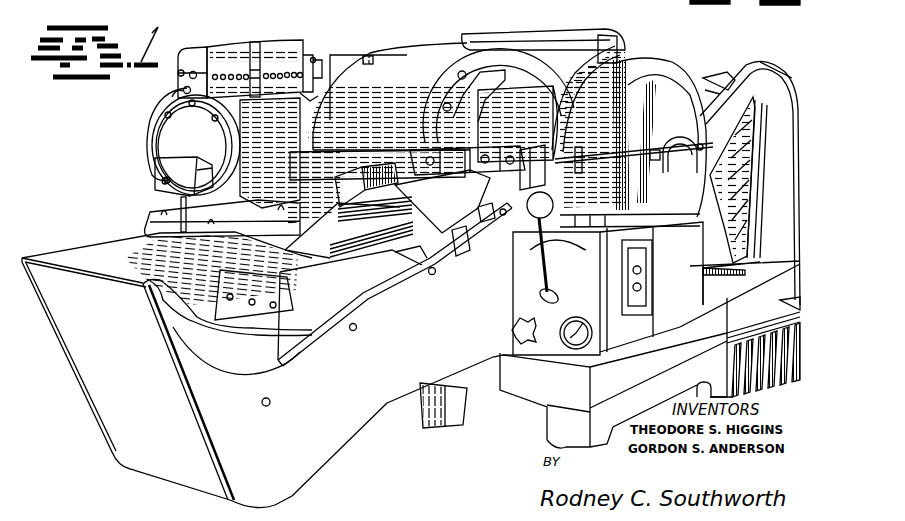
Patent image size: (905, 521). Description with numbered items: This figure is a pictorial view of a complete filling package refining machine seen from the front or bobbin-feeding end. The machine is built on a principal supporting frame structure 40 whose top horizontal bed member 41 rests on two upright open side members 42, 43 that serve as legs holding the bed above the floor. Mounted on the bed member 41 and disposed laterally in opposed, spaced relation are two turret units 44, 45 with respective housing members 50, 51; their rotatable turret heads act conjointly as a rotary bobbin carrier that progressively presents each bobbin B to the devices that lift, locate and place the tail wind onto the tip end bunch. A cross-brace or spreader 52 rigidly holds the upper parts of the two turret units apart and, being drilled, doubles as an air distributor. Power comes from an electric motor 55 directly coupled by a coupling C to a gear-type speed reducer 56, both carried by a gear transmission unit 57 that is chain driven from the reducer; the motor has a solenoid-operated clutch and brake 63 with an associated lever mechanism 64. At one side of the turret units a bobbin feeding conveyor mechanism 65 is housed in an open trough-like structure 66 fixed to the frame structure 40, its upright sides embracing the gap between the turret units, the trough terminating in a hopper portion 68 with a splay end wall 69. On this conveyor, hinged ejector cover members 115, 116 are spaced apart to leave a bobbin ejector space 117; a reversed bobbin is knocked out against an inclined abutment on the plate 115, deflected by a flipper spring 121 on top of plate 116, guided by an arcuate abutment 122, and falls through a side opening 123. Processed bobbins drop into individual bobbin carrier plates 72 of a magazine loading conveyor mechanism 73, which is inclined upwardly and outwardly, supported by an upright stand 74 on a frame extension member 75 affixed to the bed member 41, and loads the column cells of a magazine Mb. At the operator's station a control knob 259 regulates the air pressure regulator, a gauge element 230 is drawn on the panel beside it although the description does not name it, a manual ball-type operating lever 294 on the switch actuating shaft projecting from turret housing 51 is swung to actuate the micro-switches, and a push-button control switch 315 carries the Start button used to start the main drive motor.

The principal supporting frame structure 40 is at (510, 463).
The top horizontal bed member 41 is at (545, 394).
The upright open side member 42 is at (658, 390).
The upright open side member 43 is at (450, 393).
The turret unit 44 is at (389, 96).
The turret unit 45 is at (632, 136).
The housing member 50 is at (300, 182).
The housing member 51 is at (651, 287).
The cross-brace or spreader 52 is at (520, 33).
The electric motor 55 is at (211, 160).
The gear-type speed reducer 56 is at (386, 52).
The gear transmission unit 57 is at (147, 232).
The solenoid-operated clutch and brake 63 is at (222, 52).
The lever mechanism 64 is at (313, 58).
The bobbin feeding conveyor mechanism 65 is at (227, 389).
The open trough-like structure 66 is at (336, 432).
The hopper portion 68 is at (96, 262).
The splay end wall 69 is at (108, 424).
The bobbin carrier plate 72 is at (718, 75).
The magazine loading conveyor mechanism 73 is at (732, 180).
The upright stand 74 is at (707, 230).
The frame extension member 75 is at (760, 276).
The hinged ejector cover member 115 is at (463, 200).
The hinged ejector cover member 116 is at (382, 263).
The bobbin ejector space 117 is at (456, 254).
The flipper spring 121 is at (397, 202).
The arcuate abutment 122 is at (400, 252).
The side opening 123 is at (278, 258).
The gauge 230 is at (587, 300).
The control knob 259 is at (520, 330).
The manual ball-type operating lever 294 is at (540, 279).
The push-button control switch 315 is at (637, 262).
The magazine Mb is at (800, 310).
The bobbin B is at (526, 248).
The coupling C is at (586, 250).